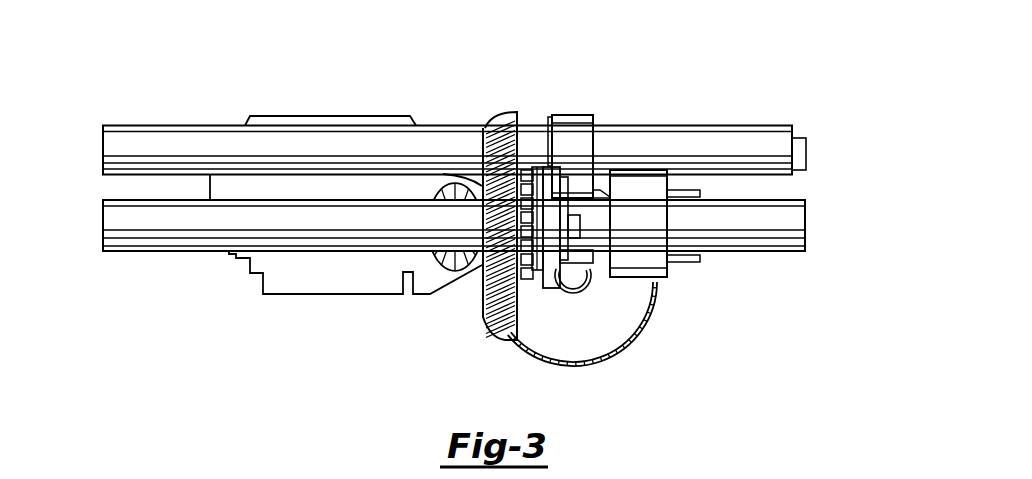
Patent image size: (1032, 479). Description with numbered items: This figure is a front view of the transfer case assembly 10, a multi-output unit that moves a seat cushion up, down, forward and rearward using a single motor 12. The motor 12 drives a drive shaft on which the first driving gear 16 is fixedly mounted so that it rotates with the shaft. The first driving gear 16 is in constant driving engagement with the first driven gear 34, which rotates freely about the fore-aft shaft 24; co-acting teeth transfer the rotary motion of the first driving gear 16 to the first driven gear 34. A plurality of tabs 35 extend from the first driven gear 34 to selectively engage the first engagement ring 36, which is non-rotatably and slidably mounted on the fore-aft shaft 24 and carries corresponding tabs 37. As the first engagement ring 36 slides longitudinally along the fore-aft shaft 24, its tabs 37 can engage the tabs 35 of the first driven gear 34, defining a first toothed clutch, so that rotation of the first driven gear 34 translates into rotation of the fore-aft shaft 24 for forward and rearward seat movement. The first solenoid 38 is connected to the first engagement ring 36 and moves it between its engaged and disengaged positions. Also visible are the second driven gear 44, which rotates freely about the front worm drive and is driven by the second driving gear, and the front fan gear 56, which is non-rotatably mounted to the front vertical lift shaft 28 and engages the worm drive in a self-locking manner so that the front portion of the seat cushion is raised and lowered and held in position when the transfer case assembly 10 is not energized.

The transfer case assembly 10 is at (117, 283).
The motor 12 is at (312, 295).
The first driving gear 16 is at (463, 277).
The fore-aft shaft 24 is at (143, 251).
The front vertical lift shaft 28 is at (722, 126).
The first driven gear 34 is at (488, 327).
The tabs 35 is at (527, 126).
The first engagement ring 36 is at (551, 126).
The tabs 37 is at (535, 270).
The first solenoid 38 is at (680, 267).
The second driven gear 44 is at (617, 327).
The front fan gear 56 is at (583, 113).